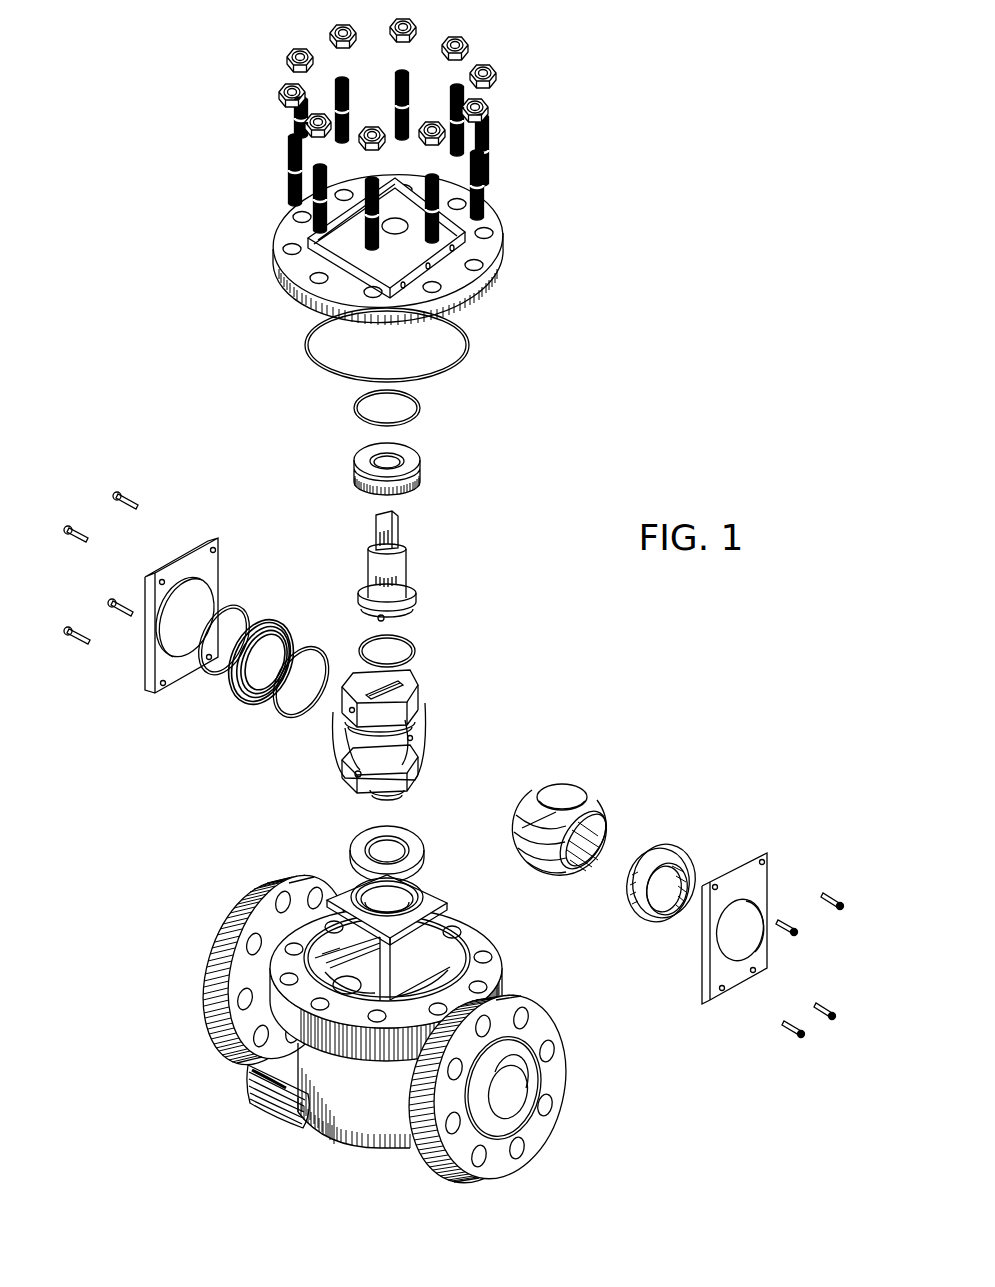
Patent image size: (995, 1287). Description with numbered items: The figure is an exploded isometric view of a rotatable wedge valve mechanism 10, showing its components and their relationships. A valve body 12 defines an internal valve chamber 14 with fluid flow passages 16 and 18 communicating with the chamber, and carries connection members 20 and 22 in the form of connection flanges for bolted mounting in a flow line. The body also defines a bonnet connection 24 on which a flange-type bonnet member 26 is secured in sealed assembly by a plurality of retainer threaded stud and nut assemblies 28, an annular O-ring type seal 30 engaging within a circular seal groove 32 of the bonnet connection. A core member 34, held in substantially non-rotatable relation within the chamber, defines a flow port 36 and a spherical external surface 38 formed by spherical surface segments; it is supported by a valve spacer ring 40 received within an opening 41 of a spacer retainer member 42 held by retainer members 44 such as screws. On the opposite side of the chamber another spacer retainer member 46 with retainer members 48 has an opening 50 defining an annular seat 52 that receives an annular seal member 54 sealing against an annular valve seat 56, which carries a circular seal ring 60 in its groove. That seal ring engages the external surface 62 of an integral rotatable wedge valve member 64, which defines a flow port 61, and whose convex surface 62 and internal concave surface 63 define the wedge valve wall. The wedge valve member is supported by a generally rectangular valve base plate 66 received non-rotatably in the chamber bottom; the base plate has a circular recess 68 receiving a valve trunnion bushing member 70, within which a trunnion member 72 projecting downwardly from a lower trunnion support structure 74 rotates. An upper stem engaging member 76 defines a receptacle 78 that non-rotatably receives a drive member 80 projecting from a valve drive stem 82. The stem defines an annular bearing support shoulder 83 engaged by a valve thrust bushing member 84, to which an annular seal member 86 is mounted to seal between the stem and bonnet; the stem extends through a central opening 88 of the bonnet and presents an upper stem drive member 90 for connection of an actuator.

The rotatable wedge valve mechanism 10 is at (578, 432).
The valve body 12 is at (368, 1113).
The valve chamber 14 is at (455, 948).
The fluid flow passage 16 is at (345, 1020).
The fluid flow passage 18 is at (512, 1095).
The connection member 20 is at (213, 978).
The connection member 22 is at (506, 1152).
The bonnet connection 24 is at (487, 970).
The bonnet member 26 is at (487, 247).
The retainer threaded stud and nut assemblies 28 is at (283, 147).
The O-ring type seal 30 is at (470, 338).
The circular seal groove 32 is at (380, 984).
The core member 34 is at (576, 782).
The flow port 36 is at (610, 840).
The spherical external surface 38 is at (590, 805).
The valve spacer ring 40 is at (678, 858).
The opening 41 is at (736, 951).
The spacer retainer member 42 is at (745, 856).
The retainer members 44 is at (832, 898).
The spacer retainer member 46 is at (187, 551).
The retainer members 48 is at (78, 525).
The opening 50 is at (176, 628).
The annular seat 52 is at (194, 668).
The annular seal member 54 is at (243, 615).
The annular valve seat 56 is at (284, 628).
The circular seal ring 60 is at (320, 652).
The flow port 61 is at (402, 718).
The external surface 62 is at (338, 740).
The internal concave surface 63 is at (360, 771).
The rotatable wedge valve member 64 is at (396, 716).
The valve base plate 66 is at (432, 892).
The circular recess 68 is at (357, 882).
The valve trunnion bushing member 70 is at (362, 835).
The trunnion member 72 is at (398, 800).
The trunnion support structure 74 is at (403, 762).
The stem engaging member 76 is at (403, 680).
The receptacle 78 is at (422, 705).
The drive member 80 is at (410, 613).
The valve drive stem 82 is at (367, 557).
The annular bearing support shoulder 83 is at (412, 593).
The valve thrust bushing member 84 is at (420, 488).
The annular seal member 86 is at (422, 407).
The central opening 88 is at (440, 250).
The upper stem drive member 90 is at (373, 520).